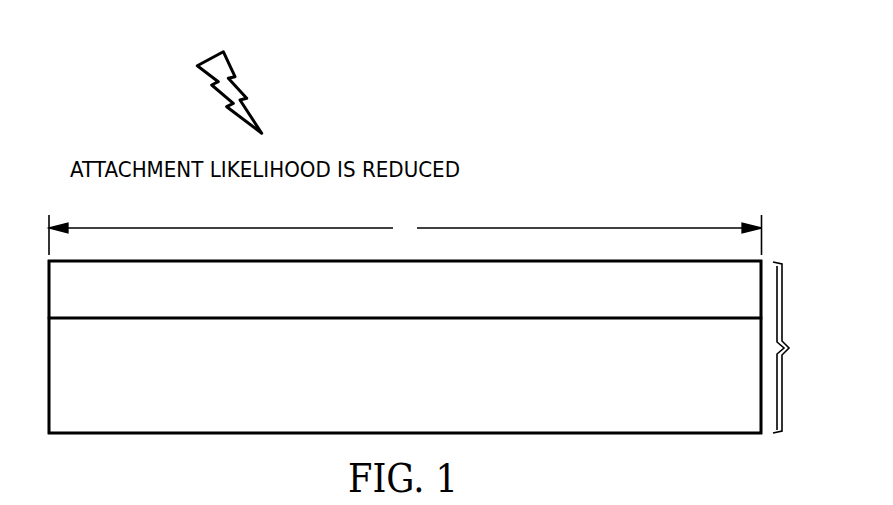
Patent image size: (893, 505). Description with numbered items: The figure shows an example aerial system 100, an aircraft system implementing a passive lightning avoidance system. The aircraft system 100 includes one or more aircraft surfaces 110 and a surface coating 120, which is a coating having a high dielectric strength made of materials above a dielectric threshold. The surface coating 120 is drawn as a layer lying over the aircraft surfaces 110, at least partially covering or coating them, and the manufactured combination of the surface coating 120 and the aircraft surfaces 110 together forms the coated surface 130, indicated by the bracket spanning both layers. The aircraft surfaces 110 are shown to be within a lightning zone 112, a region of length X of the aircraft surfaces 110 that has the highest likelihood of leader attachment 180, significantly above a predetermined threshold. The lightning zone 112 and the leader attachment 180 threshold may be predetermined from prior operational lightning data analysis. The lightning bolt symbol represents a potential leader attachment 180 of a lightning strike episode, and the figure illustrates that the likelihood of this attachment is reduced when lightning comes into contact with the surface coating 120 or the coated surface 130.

The aerial system 100 is at (570, 74).
The aircraft surfaces 110 is at (427, 390).
The lightning zone 112 is at (532, 226).
The surface coating 120 is at (427, 304).
The coated surface 130 is at (803, 347).
The leader attachment 180 is at (243, 85).